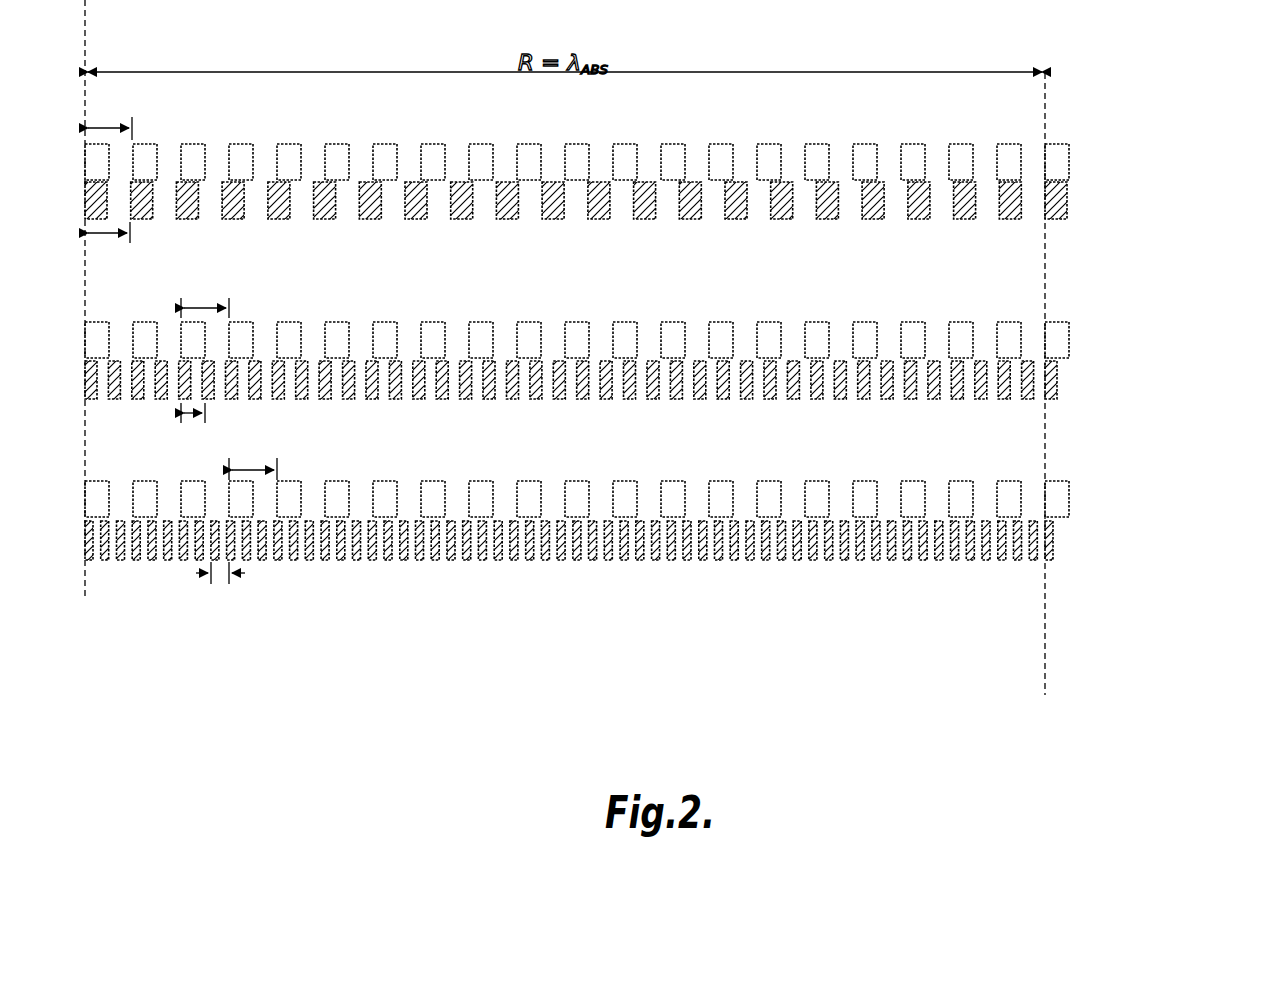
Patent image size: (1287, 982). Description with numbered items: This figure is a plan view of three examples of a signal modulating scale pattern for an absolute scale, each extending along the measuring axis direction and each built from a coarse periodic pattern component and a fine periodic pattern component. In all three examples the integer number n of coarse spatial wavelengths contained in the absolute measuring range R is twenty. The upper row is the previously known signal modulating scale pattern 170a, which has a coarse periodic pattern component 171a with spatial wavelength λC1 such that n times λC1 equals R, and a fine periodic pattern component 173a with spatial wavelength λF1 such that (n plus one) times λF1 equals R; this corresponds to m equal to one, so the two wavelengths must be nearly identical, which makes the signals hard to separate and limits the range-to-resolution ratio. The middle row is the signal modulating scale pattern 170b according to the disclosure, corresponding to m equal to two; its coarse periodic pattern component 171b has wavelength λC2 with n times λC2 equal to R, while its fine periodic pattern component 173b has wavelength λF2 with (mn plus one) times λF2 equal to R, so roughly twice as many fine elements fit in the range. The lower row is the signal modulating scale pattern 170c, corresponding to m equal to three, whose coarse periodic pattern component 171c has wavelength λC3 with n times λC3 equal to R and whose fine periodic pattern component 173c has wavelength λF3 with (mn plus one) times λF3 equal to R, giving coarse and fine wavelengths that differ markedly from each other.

The signal modulating scale pattern (prior art) 170a is at (627, 180).
The coarse periodic pattern component 171a is at (80, 163).
The fine periodic pattern component 173a is at (80, 203).
The signal modulating scale pattern 170b is at (578, 360).
The coarse periodic pattern component 171b is at (80, 341).
The fine periodic pattern component 173b is at (80, 380).
The signal modulating scale pattern 170c is at (577, 511).
The coarse periodic pattern component 171c is at (80, 499).
The fine periodic pattern component 173c is at (80, 538).